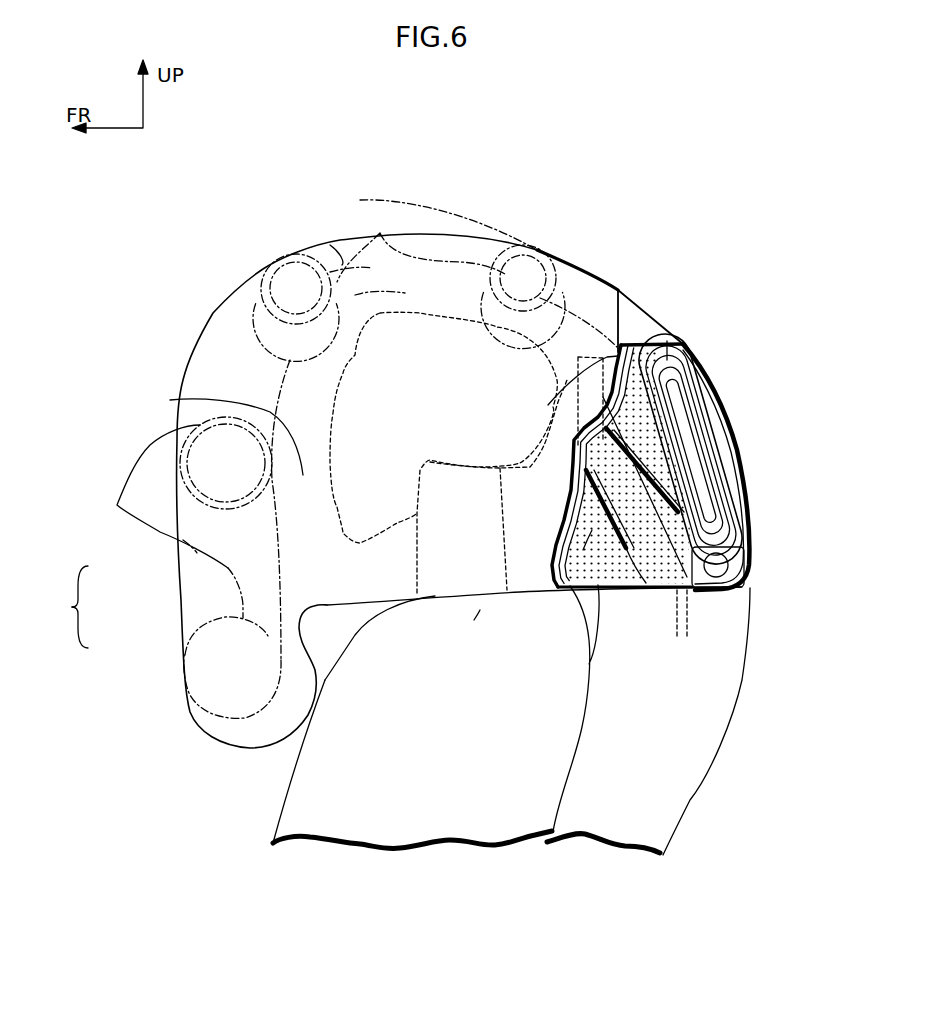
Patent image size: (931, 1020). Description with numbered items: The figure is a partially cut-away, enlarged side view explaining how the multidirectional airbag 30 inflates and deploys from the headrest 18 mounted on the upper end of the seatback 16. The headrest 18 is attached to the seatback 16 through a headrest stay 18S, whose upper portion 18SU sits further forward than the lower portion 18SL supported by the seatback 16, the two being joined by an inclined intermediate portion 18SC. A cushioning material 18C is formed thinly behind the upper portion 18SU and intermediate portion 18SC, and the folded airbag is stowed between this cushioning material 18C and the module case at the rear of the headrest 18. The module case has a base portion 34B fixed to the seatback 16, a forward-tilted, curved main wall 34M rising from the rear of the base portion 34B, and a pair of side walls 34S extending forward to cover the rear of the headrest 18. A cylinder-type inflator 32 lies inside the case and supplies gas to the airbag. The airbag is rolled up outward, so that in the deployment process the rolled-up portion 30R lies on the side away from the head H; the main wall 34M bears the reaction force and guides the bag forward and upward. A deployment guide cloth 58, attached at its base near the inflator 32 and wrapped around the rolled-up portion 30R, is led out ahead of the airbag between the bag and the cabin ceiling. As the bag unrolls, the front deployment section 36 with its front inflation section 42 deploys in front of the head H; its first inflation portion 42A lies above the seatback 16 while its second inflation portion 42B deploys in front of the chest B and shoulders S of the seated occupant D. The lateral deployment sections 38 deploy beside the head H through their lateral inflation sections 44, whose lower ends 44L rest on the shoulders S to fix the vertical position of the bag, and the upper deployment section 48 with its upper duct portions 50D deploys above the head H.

The multidirectional airbag 30 is at (206, 286).
The rolled-up portion 30R is at (430, 261).
The deployment guide cloth 58 is at (437, 207).
The upper duct portions 50D is at (342, 253).
The upper deployment section 48 is at (347, 196).
The side walls 34S is at (650, 310).
The main wall 34M is at (742, 490).
The base portion 34B is at (712, 590).
The inflator 32 is at (717, 565).
The headrest 18 is at (598, 569).
The cushioning material 18C is at (655, 586).
The headrest stay 18S is at (592, 454).
The upper portion 18SU is at (562, 390).
The intermediate portion 18SC is at (592, 530).
The lower portion 18SL is at (673, 628).
The shoulders S is at (480, 610).
The head H is at (383, 357).
The lateral inflation section 44 is at (183, 399).
The lateral deployment sections 38 is at (192, 440).
The lower ends 44L is at (468, 605).
The front inflation section 42 is at (64, 593).
The front deployment section 36 is at (60, 627).
The first inflation portion 42A is at (195, 557).
The second inflation portion 42B is at (237, 730).
The seatback 16 is at (690, 752).
The chest B is at (343, 720).
The seated occupant D is at (271, 810).